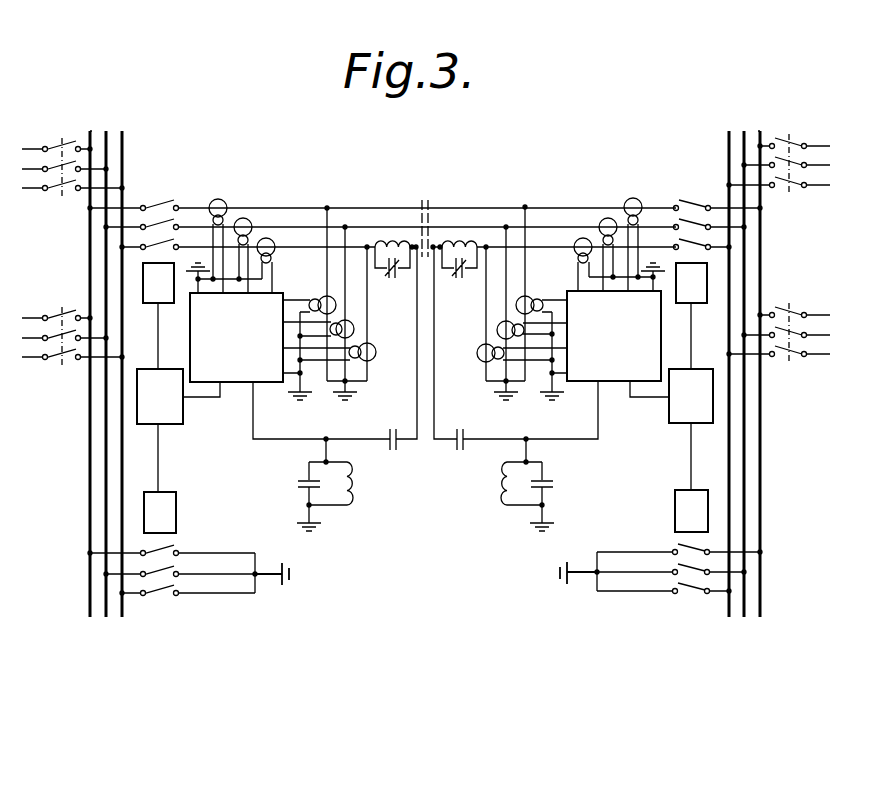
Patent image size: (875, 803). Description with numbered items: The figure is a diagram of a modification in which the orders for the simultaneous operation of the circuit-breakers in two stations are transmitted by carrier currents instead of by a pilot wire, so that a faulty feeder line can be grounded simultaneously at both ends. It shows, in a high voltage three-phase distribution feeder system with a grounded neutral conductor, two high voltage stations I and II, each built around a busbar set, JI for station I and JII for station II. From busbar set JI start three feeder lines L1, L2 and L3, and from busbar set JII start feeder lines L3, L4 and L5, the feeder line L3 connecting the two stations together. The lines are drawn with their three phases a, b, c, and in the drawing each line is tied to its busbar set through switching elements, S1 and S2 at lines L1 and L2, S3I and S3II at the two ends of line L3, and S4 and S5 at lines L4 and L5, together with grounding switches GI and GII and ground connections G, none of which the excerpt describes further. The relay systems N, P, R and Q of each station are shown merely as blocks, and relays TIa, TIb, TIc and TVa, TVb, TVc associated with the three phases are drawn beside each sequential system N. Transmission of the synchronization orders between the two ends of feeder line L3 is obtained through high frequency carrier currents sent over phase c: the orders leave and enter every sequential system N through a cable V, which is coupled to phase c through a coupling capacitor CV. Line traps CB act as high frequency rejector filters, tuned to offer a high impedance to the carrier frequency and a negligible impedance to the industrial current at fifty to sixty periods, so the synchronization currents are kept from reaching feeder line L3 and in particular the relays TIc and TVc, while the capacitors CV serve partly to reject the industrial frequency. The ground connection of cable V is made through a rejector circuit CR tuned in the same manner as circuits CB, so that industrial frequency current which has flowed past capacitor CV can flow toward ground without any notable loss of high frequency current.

The busbar set JI is at (106, 360).
The busbar set JII is at (744, 360).
The line disconnect switch S1 is at (75, 158).
The line disconnect switch S2 is at (75, 328).
The line switch of station I S3I is at (133, 215).
The line switch of station II S3II is at (718, 215).
The line disconnect switch S4 is at (776, 155).
The line disconnect switch S5 is at (776, 325).
The feeder line L1 is at (35, 182).
The feeder line L2 is at (35, 351).
The feeder line L3 is at (416, 217).
The feeder line L4 is at (819, 179).
The feeder line L5 is at (815, 349).
The phase conductor a is at (401, 200).
The phase conductor b is at (401, 220).
The phase c is at (401, 240).
The high voltage station I is at (177, 149).
The high voltage station II is at (678, 149).
The current transformer phase a TIa is at (425, 237).
The current transformer phase b TIb is at (425, 247).
The relay TIc is at (424, 257).
The voltage transformer phase a TVa is at (425, 321).
The voltage transformer phase b TVb is at (350, 328).
The relay TVc is at (425, 321).
The line trap CB is at (426, 267).
The coupling capacitor CV is at (434, 427).
The rejector circuit CR is at (425, 484).
The sequential system N is at (425, 336).
The relay system R is at (425, 283).
The relay system P is at (425, 396).
The relay system Q is at (426, 511).
The cable V is at (252, 424).
The ground G is at (426, 573).
The grounding switch of station I GI is at (172, 580).
The grounding switch of station II GII is at (678, 580).